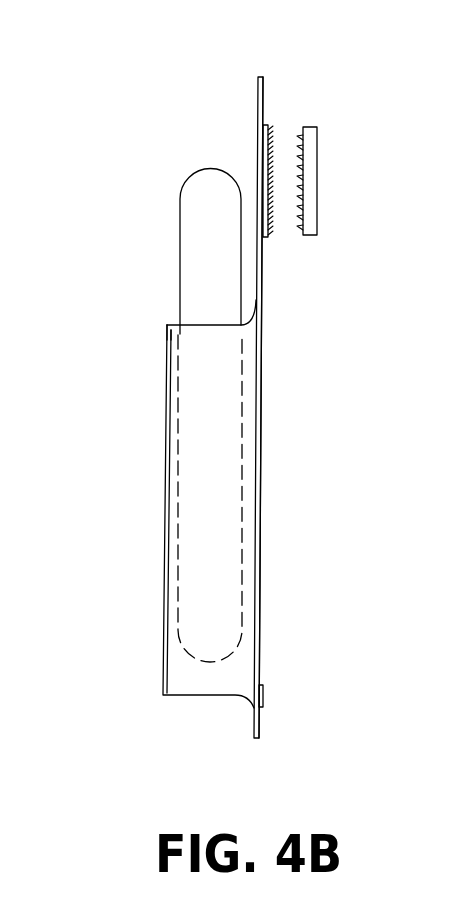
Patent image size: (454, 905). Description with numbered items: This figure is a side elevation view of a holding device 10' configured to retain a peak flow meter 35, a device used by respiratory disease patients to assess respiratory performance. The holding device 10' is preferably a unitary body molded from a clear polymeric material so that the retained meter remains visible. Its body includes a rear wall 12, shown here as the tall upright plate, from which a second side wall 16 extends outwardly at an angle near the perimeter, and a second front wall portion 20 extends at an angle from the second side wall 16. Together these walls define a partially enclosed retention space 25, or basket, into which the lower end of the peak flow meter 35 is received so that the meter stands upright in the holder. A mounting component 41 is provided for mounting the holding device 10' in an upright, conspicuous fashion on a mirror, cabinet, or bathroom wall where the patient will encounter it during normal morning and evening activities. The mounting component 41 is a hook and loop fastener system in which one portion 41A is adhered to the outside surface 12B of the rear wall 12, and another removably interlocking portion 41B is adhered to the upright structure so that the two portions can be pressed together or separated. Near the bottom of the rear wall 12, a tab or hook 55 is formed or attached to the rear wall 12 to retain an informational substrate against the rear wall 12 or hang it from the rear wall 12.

The holding device 10' is at (305, 394).
The rear wall 12 is at (259, 76).
The outside surface of rear wall 12B is at (262, 427).
The mounting component 41 is at (284, 121).
The fastener portion 41A is at (265, 237).
The removably interlocking fastener portion 41B is at (307, 236).
The peak flow meter 35 is at (197, 167).
The retention space 25 is at (164, 296).
The second side wall 16 is at (172, 338).
The second front wall portion 20 is at (163, 618).
The tab or hook 55 is at (263, 696).